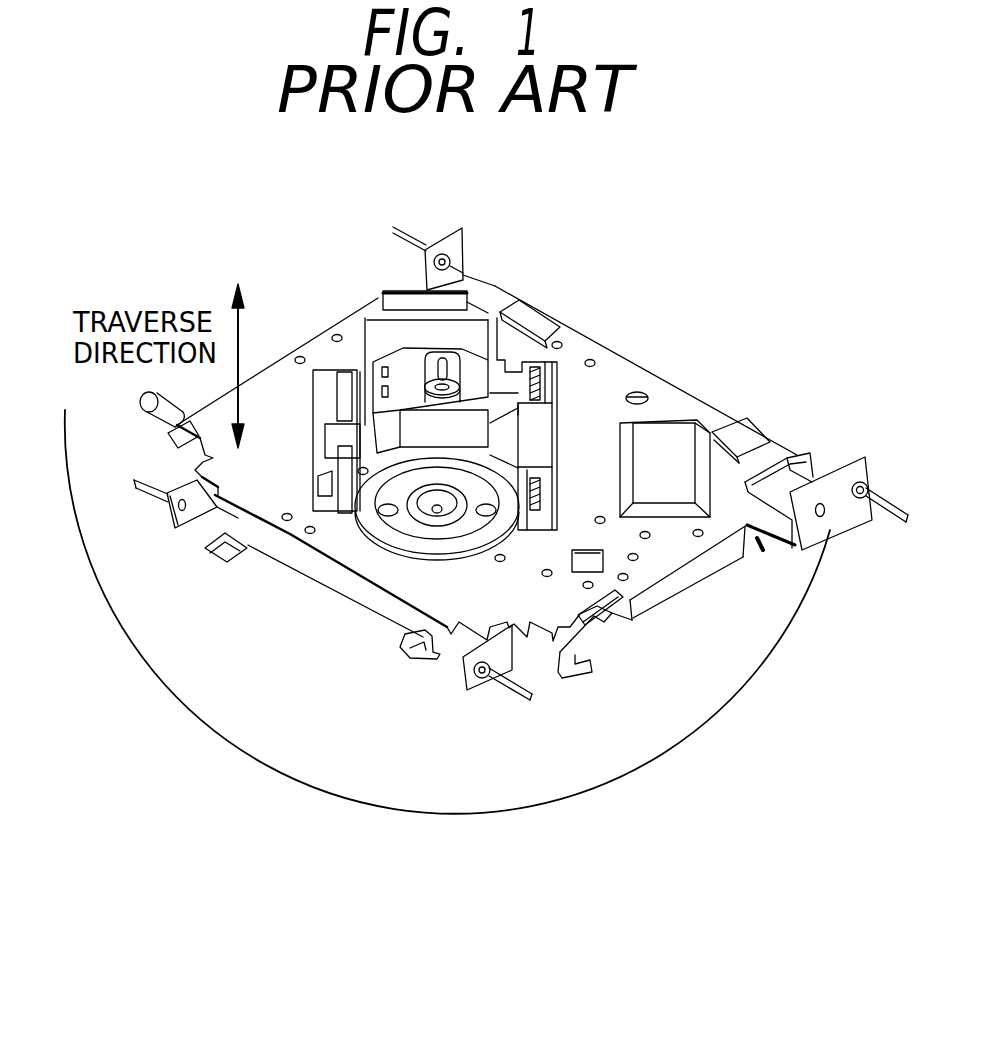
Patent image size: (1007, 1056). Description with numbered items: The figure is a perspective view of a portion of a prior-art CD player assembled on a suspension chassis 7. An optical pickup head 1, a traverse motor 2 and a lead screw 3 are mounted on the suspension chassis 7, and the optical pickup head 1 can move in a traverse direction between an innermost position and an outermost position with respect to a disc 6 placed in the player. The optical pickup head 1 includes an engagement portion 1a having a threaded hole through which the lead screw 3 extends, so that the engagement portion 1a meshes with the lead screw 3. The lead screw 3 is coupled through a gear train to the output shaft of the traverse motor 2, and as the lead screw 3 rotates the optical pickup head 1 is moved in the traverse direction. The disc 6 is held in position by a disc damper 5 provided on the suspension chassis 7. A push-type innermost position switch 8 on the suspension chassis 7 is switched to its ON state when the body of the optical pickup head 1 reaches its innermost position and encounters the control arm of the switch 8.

The optical pickup head 1 is at (395, 338).
The engagement portion 1a is at (545, 432).
The traverse motor 2 is at (687, 432).
The lead screw 3 is at (553, 498).
The disc damper 5 is at (473, 547).
The disc 6 is at (550, 803).
The suspension chassis 7 is at (408, 592).
The innermost position switch 8 is at (302, 513).